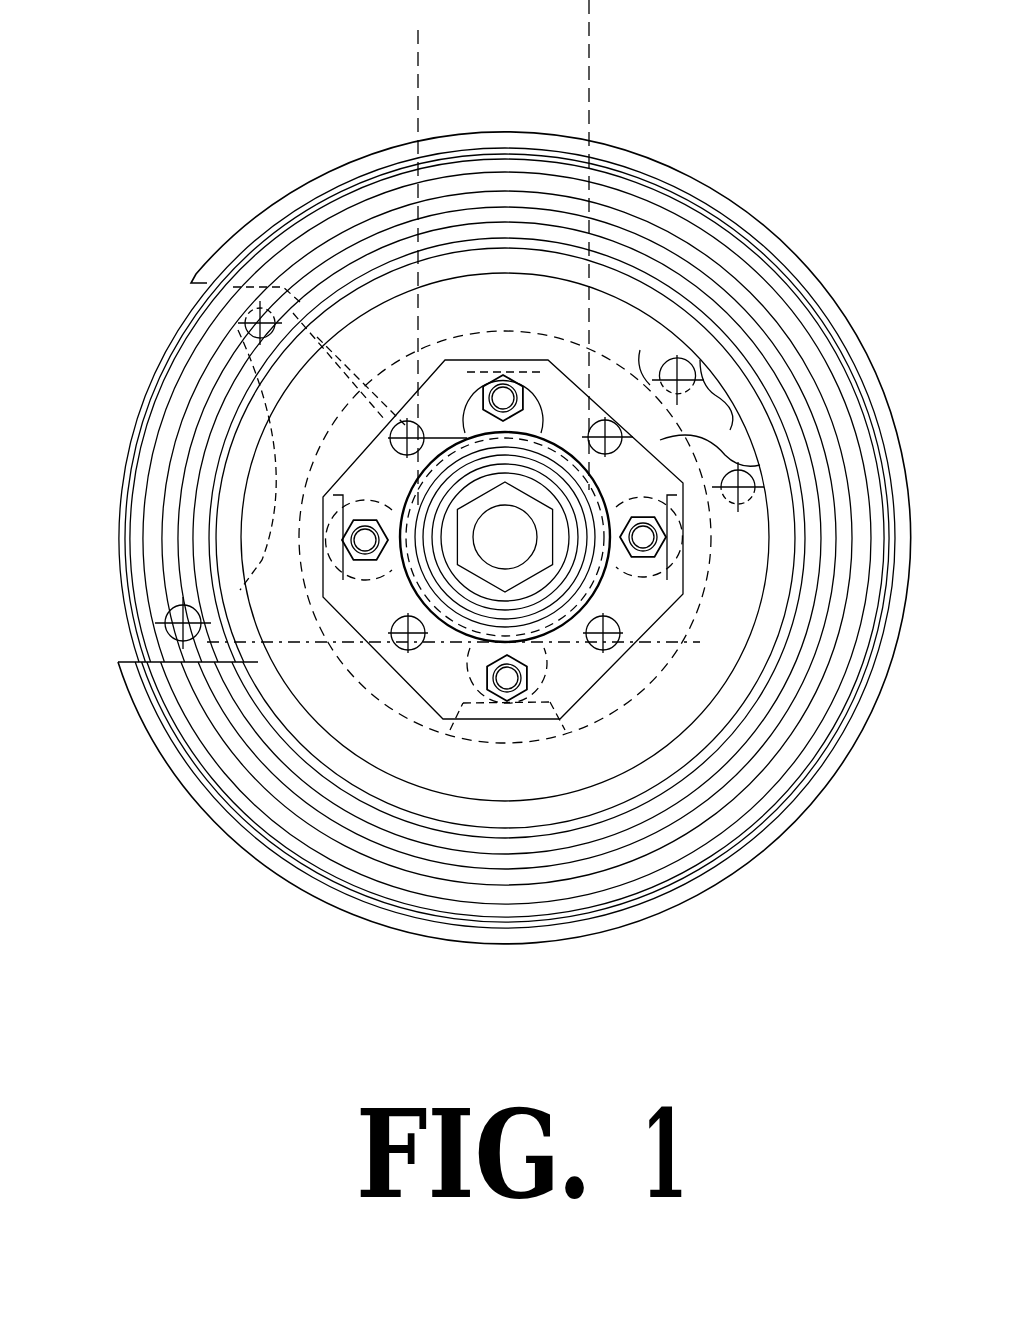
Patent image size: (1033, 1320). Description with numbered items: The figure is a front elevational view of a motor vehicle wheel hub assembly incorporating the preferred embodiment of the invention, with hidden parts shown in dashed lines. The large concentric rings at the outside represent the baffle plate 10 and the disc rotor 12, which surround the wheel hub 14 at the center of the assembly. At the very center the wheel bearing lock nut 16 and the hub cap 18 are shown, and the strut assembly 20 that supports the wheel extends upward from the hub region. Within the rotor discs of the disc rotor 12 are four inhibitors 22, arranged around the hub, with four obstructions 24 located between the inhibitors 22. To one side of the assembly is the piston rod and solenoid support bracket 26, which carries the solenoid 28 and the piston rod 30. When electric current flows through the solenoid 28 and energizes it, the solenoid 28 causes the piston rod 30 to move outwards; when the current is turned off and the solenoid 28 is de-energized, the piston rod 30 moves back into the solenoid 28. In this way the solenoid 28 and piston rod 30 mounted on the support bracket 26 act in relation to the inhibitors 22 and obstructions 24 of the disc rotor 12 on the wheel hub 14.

The baffle plate 10 is at (822, 284).
The disc rotor 12 is at (200, 324).
The wheel hub 14 is at (272, 432).
The wheel bearing lock nut 16 is at (540, 573).
The hub cap 18 is at (547, 355).
The strut assembly 20 is at (592, 60).
The inhibitors 22 is at (614, 372).
The obstructions 24 is at (492, 340).
The piston rod and solenoid support bracket 26 is at (240, 555).
The solenoid 28 is at (704, 380).
The piston rod 30 is at (720, 456).